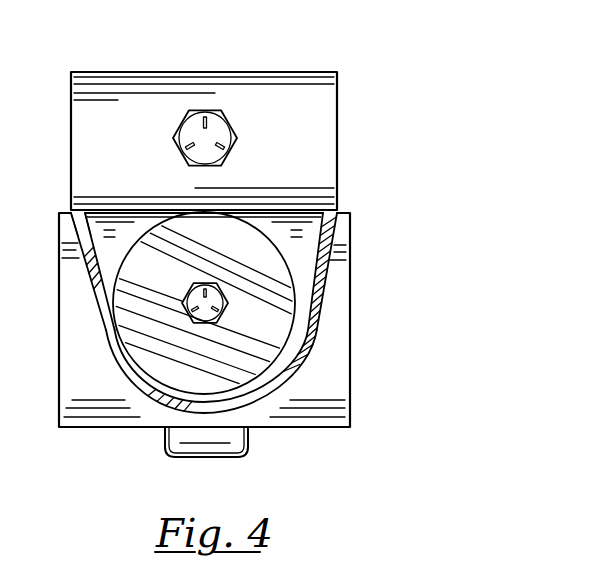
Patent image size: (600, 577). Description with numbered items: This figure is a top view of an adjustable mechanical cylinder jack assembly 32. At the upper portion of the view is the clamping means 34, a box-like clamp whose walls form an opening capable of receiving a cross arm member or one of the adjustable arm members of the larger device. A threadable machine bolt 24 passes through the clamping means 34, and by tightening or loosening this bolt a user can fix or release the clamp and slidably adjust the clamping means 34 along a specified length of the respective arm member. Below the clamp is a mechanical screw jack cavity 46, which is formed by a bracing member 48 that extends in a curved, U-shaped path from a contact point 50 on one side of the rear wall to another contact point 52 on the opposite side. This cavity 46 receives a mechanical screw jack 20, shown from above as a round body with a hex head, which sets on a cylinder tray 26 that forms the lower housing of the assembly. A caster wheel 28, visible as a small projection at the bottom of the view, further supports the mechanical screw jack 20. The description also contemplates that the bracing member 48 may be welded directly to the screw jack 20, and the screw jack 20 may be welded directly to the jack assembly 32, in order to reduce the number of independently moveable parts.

The mechanical screw jack 20 is at (262, 312).
The threadable machine bolt 24 is at (232, 120).
The cylinder tray 26 is at (80, 349).
The caster wheel 28 is at (243, 437).
The adjustable mechanical cylinder jack assembly 32 is at (369, 89).
The clamping means 34 is at (95, 152).
The mechanical screw jack cavity 46 is at (110, 262).
The bracing member 48 is at (158, 400).
The contact point 50 is at (78, 213).
The contact point 52 is at (330, 215).